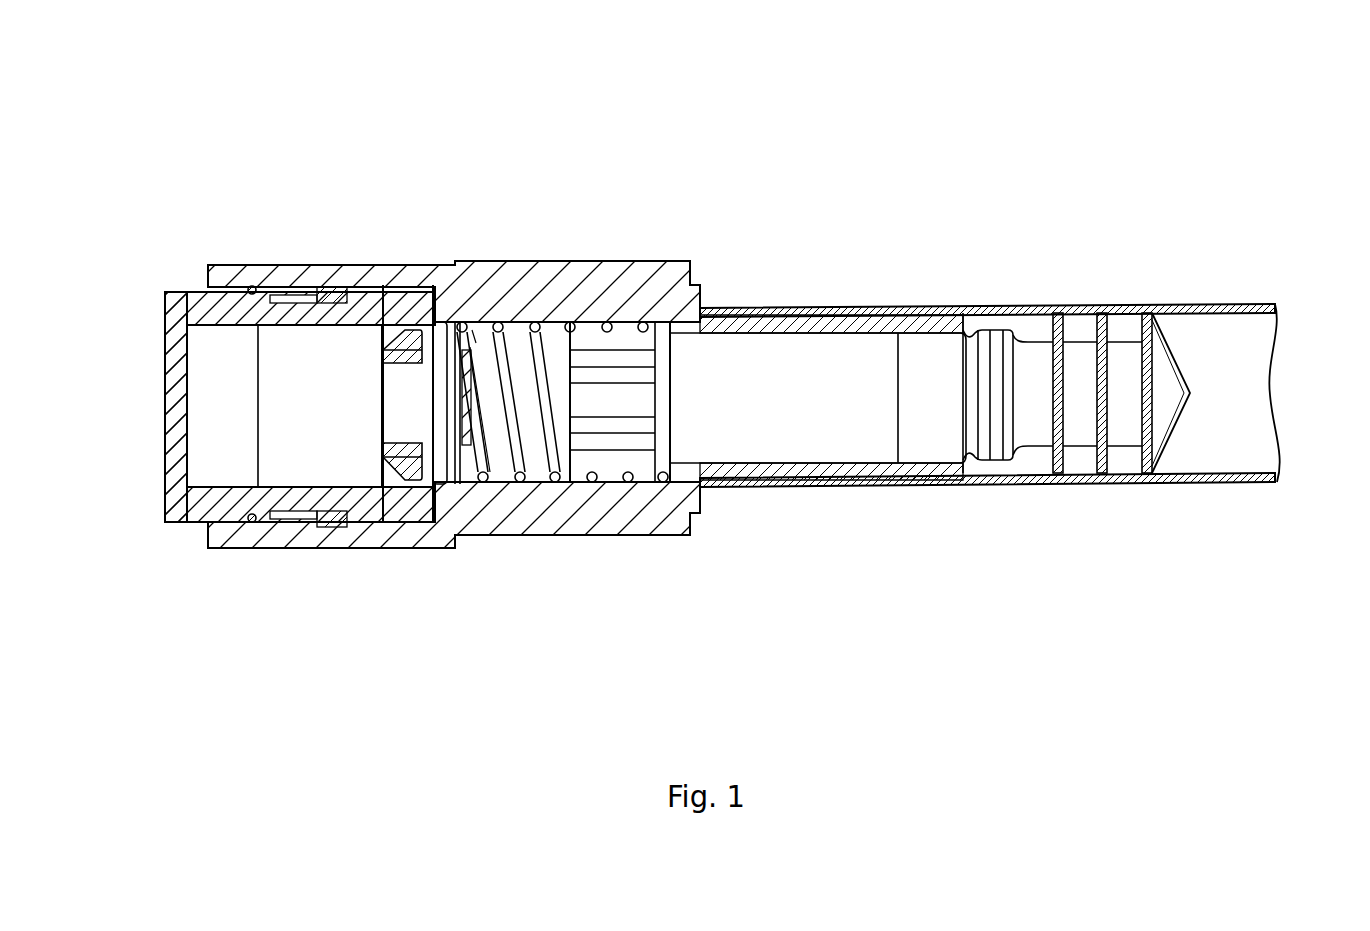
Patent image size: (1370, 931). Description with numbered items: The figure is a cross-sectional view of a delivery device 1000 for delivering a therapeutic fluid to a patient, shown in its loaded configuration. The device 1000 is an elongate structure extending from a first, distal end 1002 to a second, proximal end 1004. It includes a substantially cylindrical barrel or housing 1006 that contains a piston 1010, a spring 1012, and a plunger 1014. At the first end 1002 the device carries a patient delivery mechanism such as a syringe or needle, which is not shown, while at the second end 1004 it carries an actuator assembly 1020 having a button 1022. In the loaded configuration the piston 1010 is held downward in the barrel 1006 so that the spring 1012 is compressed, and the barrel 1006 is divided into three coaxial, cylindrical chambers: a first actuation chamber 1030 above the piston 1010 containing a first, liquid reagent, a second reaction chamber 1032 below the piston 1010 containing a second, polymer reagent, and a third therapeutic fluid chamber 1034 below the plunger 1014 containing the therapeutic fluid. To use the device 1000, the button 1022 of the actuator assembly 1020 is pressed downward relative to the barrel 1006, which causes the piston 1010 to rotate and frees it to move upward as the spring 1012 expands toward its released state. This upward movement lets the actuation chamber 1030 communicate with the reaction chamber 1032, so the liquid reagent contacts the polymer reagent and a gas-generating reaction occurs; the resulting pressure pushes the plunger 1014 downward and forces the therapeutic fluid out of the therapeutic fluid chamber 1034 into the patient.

The delivery device 1000 is at (1198, 198).
The first, distal end 1002 is at (1283, 552).
The second, proximal end 1004 is at (155, 560).
The barrel or housing 1006 is at (807, 310).
The piston 1010 is at (400, 403).
The spring 1012 is at (570, 483).
The plunger 1014 is at (1030, 360).
The actuator assembly 1020 is at (170, 290).
The button 1022 is at (170, 443).
The first actuation chamber 1030 is at (283, 470).
The second reaction chamber 1032 is at (522, 315).
The third therapeutic fluid chamber 1034 is at (1218, 340).